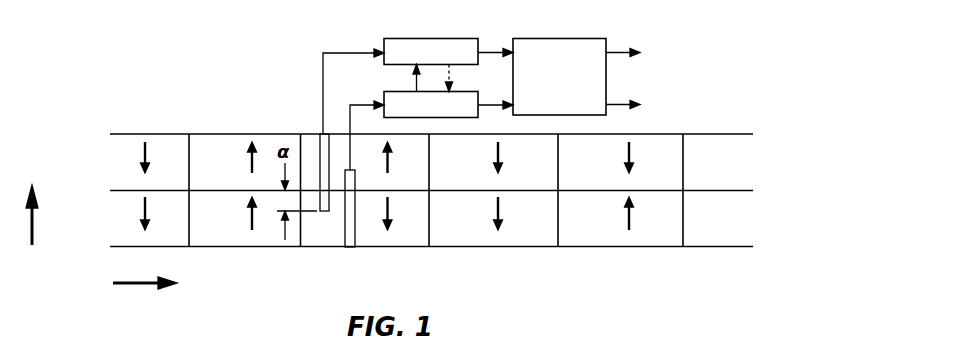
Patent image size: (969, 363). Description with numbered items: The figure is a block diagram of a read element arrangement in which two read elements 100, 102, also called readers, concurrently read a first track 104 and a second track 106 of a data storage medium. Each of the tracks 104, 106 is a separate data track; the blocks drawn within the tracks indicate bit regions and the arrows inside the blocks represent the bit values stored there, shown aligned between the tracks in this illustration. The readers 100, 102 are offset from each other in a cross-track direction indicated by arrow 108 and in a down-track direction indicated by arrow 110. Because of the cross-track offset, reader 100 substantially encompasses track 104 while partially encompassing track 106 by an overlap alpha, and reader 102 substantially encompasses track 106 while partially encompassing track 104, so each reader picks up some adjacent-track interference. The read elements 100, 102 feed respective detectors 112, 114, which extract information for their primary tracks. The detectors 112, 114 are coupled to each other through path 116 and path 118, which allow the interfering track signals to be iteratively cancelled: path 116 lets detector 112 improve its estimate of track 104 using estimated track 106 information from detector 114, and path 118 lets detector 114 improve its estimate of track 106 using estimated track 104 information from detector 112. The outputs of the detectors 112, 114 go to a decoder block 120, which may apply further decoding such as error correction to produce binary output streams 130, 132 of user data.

The read element 100 is at (324, 211).
The read element 102 is at (350, 238).
The first track 104 is at (106, 134).
The second track 106 is at (106, 190).
The cross-track direction arrow 108 is at (32, 245).
The down-track direction arrow 110 is at (137, 283).
The detector 112 is at (448, 52).
The detector 114 is at (448, 105).
The path 116 is at (414, 76).
The path 118 is at (452, 77).
The decoder block 120 is at (559, 77).
The binary output stream 130 is at (690, 55).
The binary output stream 132 is at (690, 107).